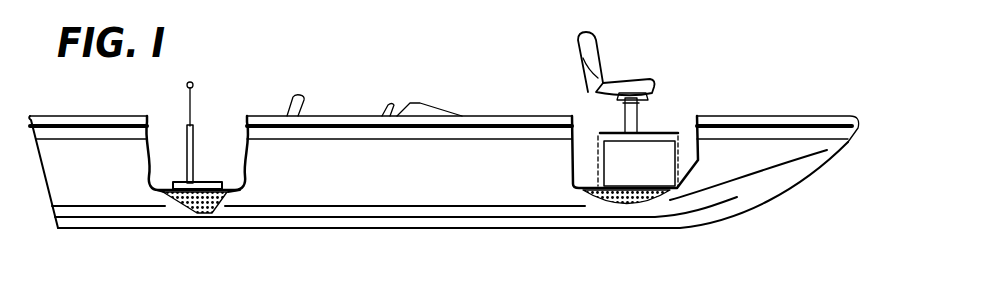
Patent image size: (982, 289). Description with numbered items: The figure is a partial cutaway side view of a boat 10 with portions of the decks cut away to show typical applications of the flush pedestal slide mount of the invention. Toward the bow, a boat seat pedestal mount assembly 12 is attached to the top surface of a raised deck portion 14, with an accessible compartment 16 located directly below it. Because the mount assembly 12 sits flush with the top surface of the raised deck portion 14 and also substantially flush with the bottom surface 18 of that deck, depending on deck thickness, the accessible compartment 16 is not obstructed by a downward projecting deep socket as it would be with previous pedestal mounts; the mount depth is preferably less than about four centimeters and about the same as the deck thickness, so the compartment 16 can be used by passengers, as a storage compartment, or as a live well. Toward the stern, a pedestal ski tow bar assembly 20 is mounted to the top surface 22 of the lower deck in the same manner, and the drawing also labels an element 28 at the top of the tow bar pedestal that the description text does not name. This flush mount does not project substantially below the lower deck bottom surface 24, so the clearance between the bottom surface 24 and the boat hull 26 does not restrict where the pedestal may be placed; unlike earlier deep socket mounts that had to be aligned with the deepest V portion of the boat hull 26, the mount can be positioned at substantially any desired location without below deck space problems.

The boat 10 is at (428, 70).
The boat seat pedestal mount assembly 12 is at (620, 99).
The raised deck portion 14 is at (664, 153).
The accessible compartment 16 is at (632, 180).
The bottom surface 18 is at (630, 162).
The pedestal ski tow bar assembly 20 is at (188, 127).
The top surface of lower deck 22 is at (240, 182).
The lower deck bottom surface 24 is at (172, 198).
The boat hull 26 is at (195, 214).
The knob 28 is at (194, 84).